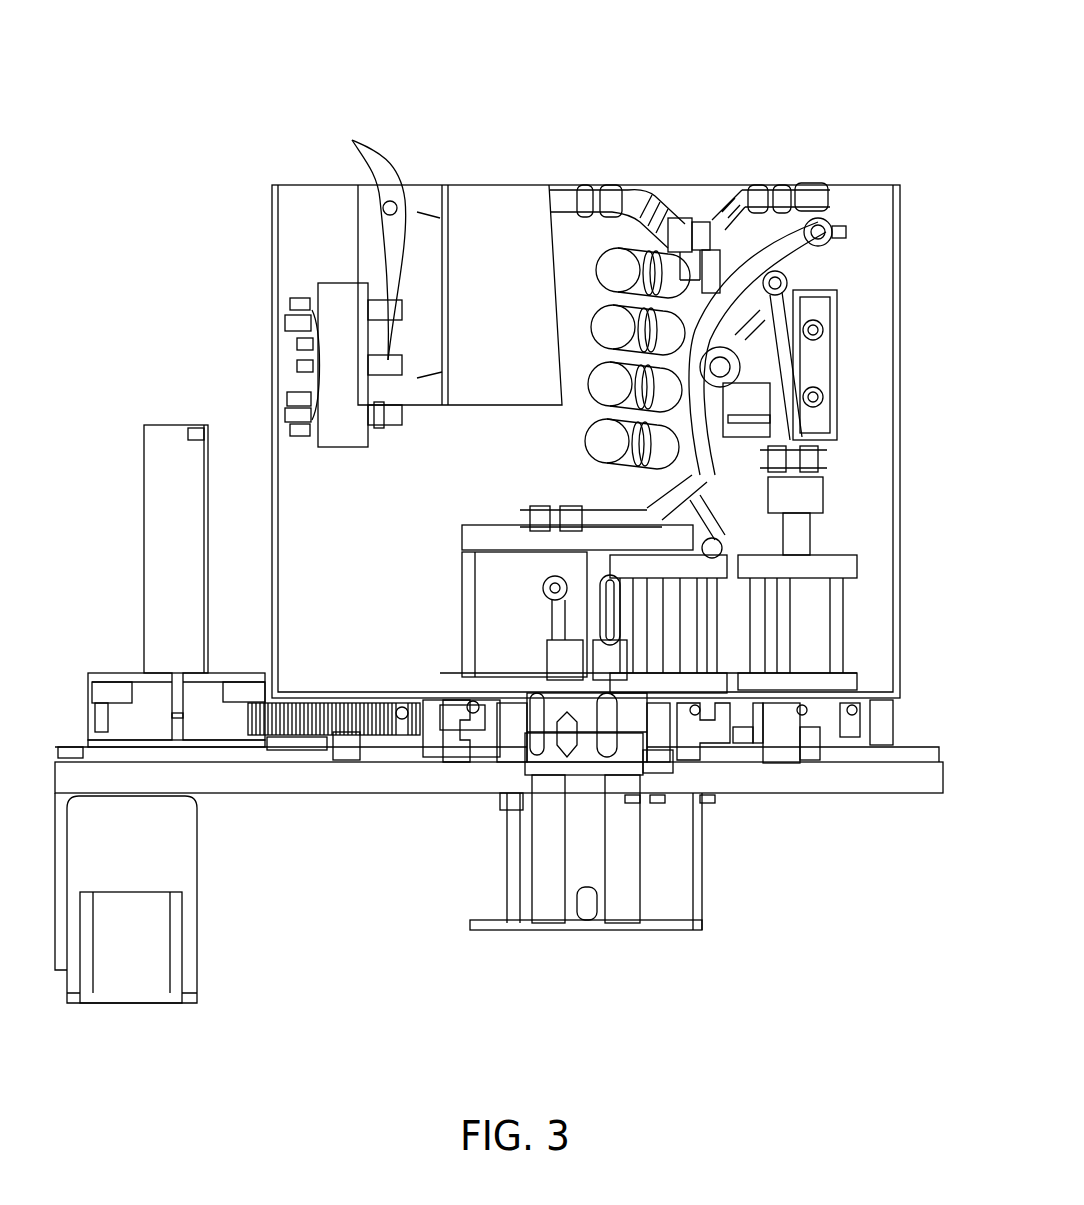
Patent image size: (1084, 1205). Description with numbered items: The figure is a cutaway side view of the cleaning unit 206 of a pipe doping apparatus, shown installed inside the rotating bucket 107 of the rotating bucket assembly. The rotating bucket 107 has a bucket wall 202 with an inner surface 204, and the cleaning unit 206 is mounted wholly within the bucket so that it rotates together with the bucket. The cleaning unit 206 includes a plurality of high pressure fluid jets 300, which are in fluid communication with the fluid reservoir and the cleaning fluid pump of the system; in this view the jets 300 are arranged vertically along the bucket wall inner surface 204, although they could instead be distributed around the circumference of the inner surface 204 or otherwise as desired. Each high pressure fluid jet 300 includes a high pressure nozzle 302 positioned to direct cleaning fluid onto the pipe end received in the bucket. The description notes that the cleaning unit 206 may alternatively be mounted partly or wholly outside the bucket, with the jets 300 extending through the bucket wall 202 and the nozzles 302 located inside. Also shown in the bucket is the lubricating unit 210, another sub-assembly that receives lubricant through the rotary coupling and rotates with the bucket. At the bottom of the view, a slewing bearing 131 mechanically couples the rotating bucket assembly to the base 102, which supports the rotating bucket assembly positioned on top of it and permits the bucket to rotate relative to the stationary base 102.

The base 102 is at (803, 772).
The rotating bucket 107 is at (272, 352).
The slewing bearing 131 is at (687, 745).
The bucket wall 202 is at (272, 442).
The inner surface 204 is at (277, 629).
The cleaning unit 206 is at (322, 286).
The lubricating unit 210 is at (684, 207).
The high pressure fluid jets 300 is at (358, 236).
The high pressure nozzle 302 is at (402, 425).